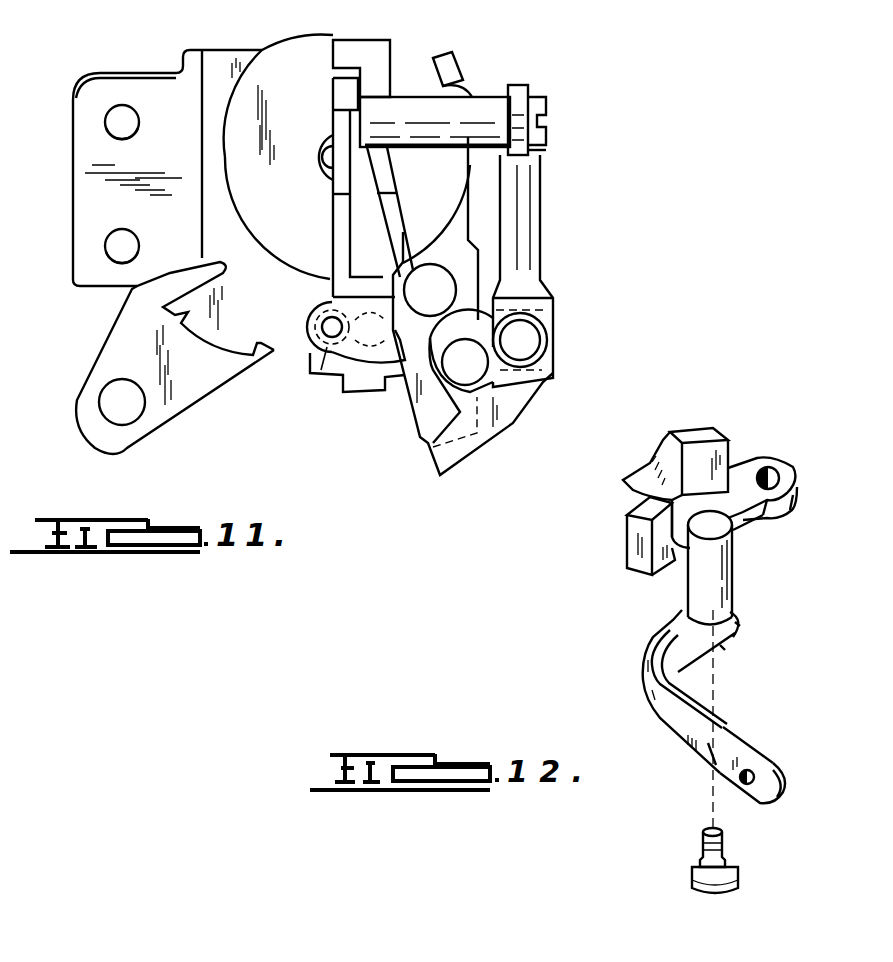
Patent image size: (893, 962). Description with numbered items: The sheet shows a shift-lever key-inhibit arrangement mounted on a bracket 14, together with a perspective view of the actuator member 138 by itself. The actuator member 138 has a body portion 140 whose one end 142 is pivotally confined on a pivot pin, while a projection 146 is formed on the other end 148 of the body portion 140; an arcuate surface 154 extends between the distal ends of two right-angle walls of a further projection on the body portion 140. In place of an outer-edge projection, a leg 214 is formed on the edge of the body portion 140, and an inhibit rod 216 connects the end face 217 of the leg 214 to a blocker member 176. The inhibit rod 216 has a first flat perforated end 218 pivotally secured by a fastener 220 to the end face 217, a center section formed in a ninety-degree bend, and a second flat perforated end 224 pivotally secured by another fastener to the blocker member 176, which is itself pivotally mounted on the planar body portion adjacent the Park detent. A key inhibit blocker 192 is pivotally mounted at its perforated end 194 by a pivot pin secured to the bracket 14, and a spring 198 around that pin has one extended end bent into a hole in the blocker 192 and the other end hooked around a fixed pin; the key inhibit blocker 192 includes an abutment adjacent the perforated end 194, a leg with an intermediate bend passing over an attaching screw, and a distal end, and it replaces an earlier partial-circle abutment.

In FIG. 11, the bracket 14 is at (146, 72).
In FIG. 11, the other end of the body portion 148 is at (352, 40).
In FIG. 12, the other end of the body portion 148 is at (627, 530).
In FIG. 11, the end face of the leg 217 is at (517, 95).
In FIG. 12, the end face of the leg 217 is at (740, 622).
In FIG. 11, the first flat perforated end 218 is at (545, 108).
In FIG. 12, the first flat perforated end 218 is at (722, 648).
In FIG. 11, the fastener 220 is at (548, 150).
In FIG. 12, the fastener 220 is at (692, 880).
In FIG. 11, the inhibit rod 216 is at (548, 200).
In FIG. 12, the inhibit rod 216 is at (643, 684).
In FIG. 11, the key inhibit blocker 192 is at (330, 215).
In FIG. 11, the perforated end 194 is at (305, 316).
In FIG. 11, the spring 198 is at (327, 347).
In FIG. 11, the blocker member 176 is at (440, 473).
In FIG. 12, the actuator member 138 is at (758, 430).
In FIG. 12, the arcuate surface 154 is at (650, 455).
In FIG. 12, the one end of the body portion 142 is at (793, 470).
In FIG. 12, the body portion 140 is at (750, 522).
In FIG. 12, the projection 146 is at (662, 542).
In FIG. 12, the leg 214 is at (690, 597).
In FIG. 12, the second flat perforated end 224 is at (745, 800).